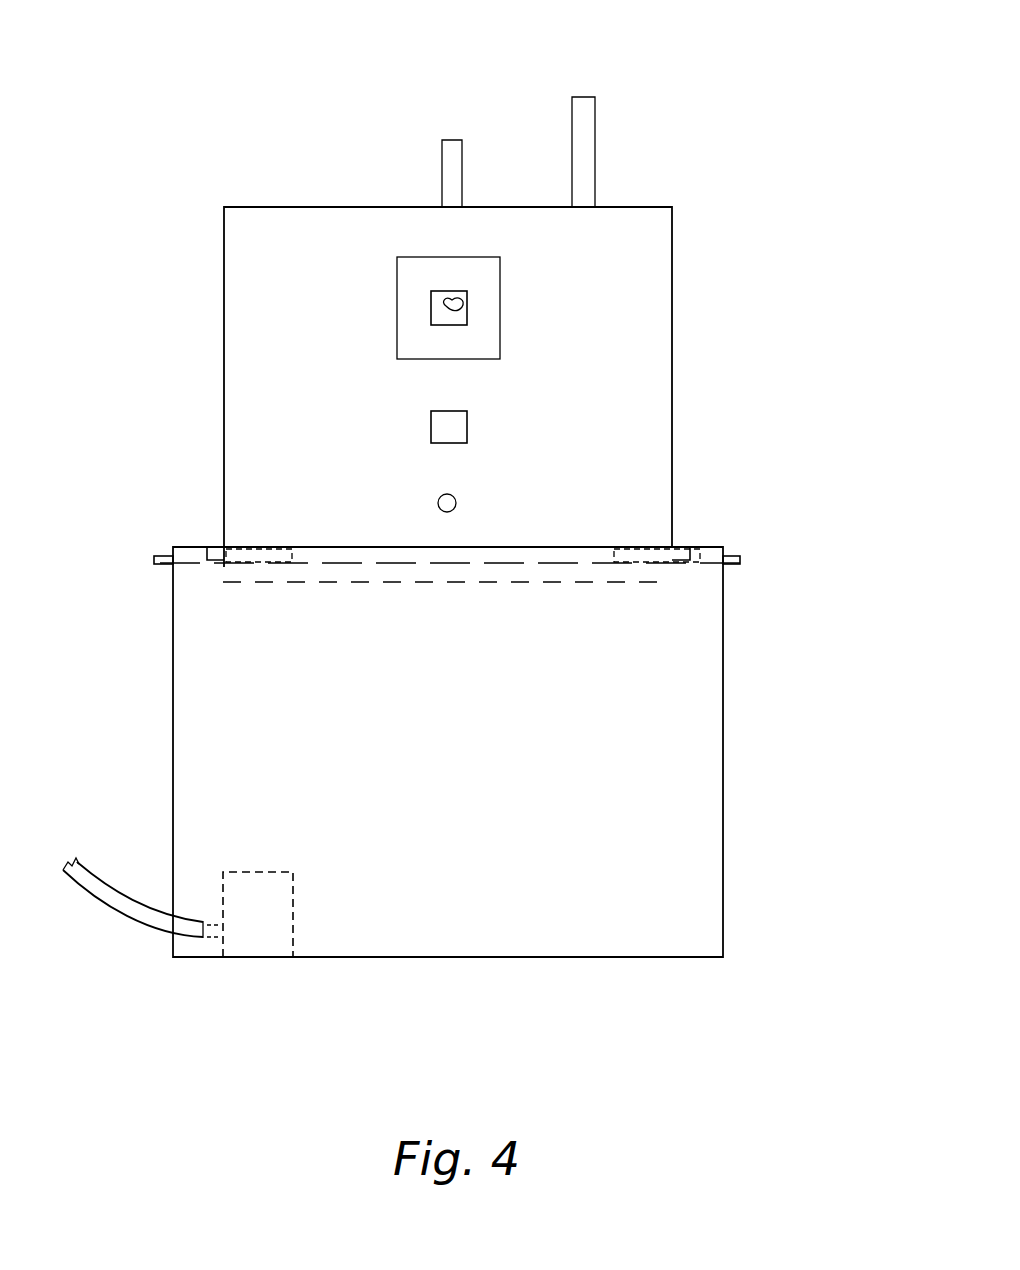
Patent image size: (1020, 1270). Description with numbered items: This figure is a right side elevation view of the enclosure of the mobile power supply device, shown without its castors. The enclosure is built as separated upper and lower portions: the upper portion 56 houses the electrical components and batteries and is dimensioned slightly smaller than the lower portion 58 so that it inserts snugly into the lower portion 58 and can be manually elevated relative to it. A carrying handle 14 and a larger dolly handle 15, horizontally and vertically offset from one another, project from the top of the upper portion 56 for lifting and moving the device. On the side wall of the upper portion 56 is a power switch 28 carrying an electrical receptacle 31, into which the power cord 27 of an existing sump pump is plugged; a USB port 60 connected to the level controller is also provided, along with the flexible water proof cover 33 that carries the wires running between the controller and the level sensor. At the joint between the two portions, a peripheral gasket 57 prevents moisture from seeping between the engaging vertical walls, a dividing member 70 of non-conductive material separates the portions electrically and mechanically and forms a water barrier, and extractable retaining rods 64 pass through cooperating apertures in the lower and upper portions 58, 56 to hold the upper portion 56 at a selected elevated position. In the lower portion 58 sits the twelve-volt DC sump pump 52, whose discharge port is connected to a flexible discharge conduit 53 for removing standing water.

The carrying handle 14 is at (444, 138).
The dolly handle 15 is at (582, 97).
The power cord 27 is at (452, 312).
The power switch 28 is at (500, 275).
The electrical receptacle 31 is at (460, 313).
The flexible water proof cover 33 is at (456, 498).
The sump pump 52 is at (272, 914).
The flexible discharge conduit 53 is at (100, 878).
The upper portion 56 is at (660, 345).
The peripheral gasket 57 is at (218, 545).
The lower portion 58 is at (188, 544).
The USB port 60 is at (467, 428).
The retaining rods 64 is at (154, 560).
The dividing member 70 is at (350, 563).